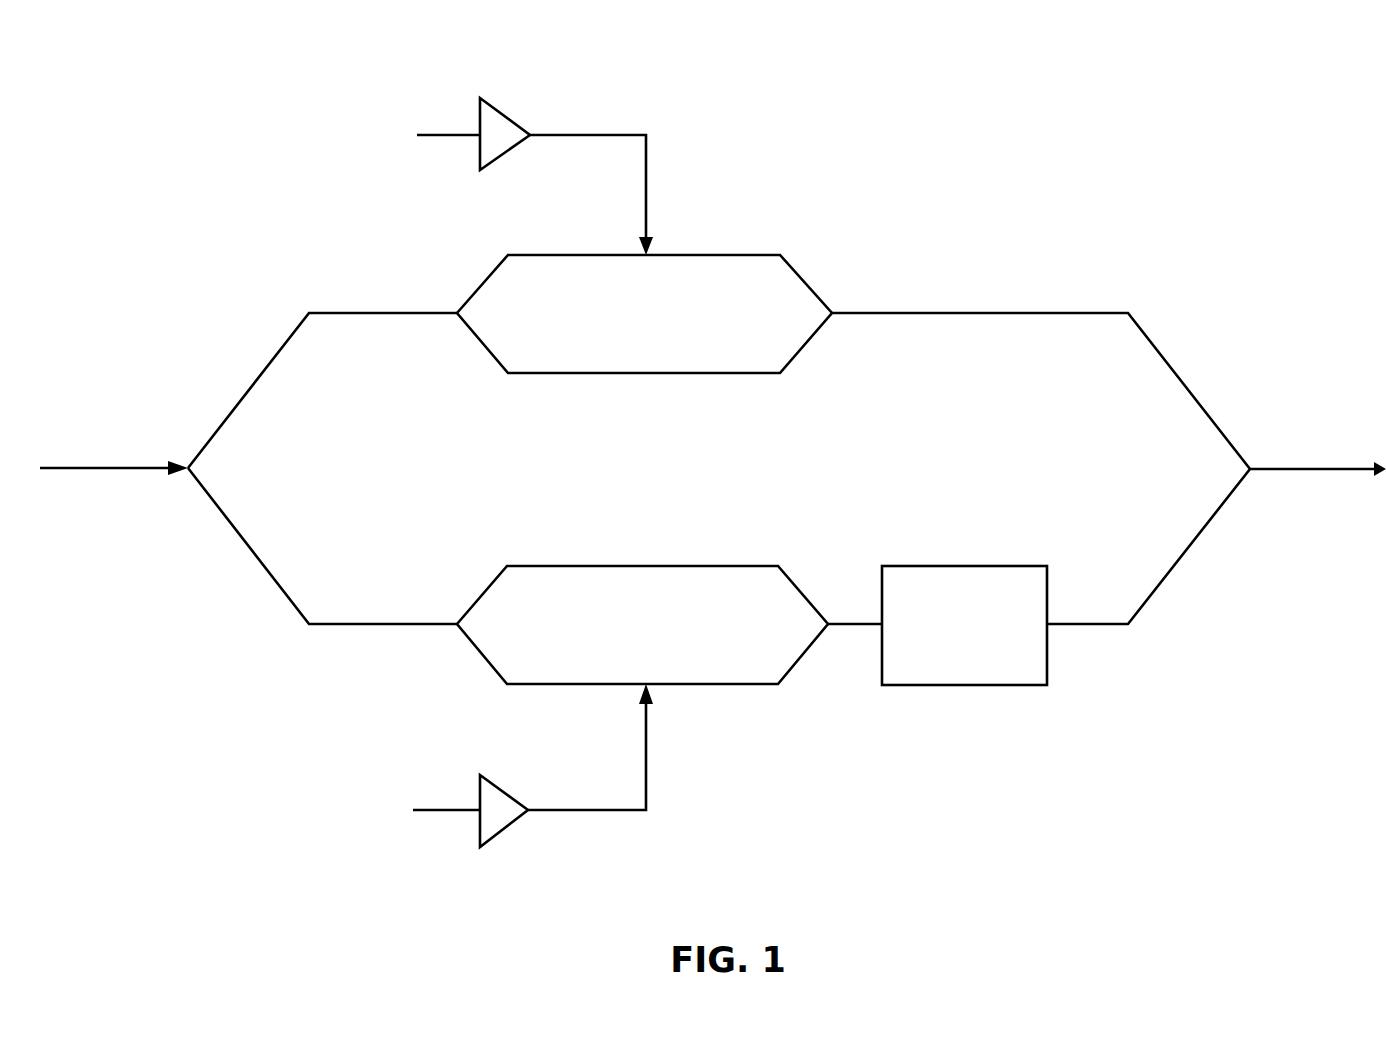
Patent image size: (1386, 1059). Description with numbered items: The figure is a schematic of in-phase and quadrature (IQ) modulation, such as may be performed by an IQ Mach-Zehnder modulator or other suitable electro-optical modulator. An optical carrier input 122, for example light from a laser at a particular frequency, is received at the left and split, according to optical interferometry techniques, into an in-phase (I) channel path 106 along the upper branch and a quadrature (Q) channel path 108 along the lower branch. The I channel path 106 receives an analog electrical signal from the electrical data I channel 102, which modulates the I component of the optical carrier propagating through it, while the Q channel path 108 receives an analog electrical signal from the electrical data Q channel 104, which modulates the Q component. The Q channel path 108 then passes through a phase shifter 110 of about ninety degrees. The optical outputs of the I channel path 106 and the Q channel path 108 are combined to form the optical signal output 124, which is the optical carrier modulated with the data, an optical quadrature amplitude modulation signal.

The analog electrical data I channel 102 is at (507, 154).
The analog electrical data Q channel 104 is at (520, 767).
The in-phase (I) channel path 106 is at (276, 273).
The quadrature (Q) channel path 108 is at (295, 657).
The phase shifter 110 is at (963, 685).
The optical carrier input 122 is at (114, 425).
The optical signal output 124 is at (1318, 411).